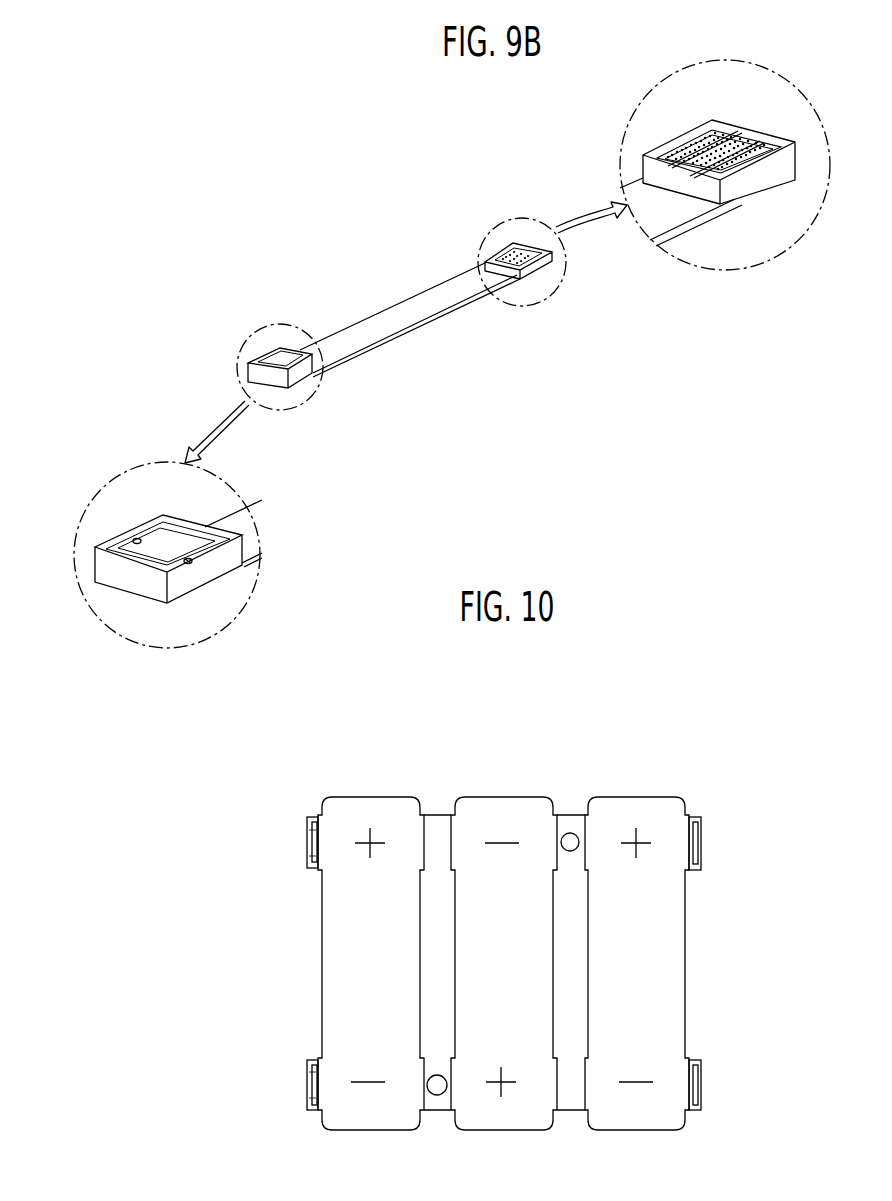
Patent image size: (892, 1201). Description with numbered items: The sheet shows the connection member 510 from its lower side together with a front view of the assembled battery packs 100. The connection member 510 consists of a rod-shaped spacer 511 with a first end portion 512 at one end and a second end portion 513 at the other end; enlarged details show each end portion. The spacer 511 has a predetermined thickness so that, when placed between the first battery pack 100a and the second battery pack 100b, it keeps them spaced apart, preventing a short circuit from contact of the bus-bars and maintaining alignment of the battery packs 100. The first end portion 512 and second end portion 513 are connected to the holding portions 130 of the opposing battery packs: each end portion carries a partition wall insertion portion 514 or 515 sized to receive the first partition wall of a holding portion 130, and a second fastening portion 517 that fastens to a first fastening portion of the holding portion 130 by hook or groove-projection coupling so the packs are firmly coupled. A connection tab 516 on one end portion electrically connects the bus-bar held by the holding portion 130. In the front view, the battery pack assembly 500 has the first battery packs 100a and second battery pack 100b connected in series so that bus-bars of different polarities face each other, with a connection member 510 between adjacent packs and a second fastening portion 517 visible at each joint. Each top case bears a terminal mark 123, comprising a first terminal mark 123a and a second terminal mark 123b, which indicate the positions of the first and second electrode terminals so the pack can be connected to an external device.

In FIG. 9B, the connection member 510 is at (400, 168).
In FIG. 10, the connection member 510 is at (438, 810).
In FIG. 9B, the spacer 511 is at (382, 329).
In FIG. 9B, the first end portion 512 is at (297, 375).
In FIG. 9B, the second end portion 513 is at (535, 268).
In FIG. 9B, the partition wall insertion portion 514 is at (163, 556).
In FIG. 9B, the partition wall insertion portion 515 is at (777, 138).
In FIG. 9B, the connection tab 516 is at (700, 145).
In FIG. 9B, the second fastening portion 517 is at (165, 557).
In FIG. 10, the second fastening portion 517 is at (575, 840).
In FIG. 10, the battery pack 500 is at (247, 763).
In FIG. 10, the battery pack 100 is at (365, 688).
In FIG. 10, the first battery pack 100a is at (362, 792).
In FIG. 10, the second battery pack 100b is at (495, 792).
In FIG. 10, the holding portion 130 is at (713, 843).
In FIG. 10, the terminal mark 123 is at (213, 820).
In FIG. 10, the first terminal mark 123a is at (353, 848).
In FIG. 10, the second terminal mark 123b is at (353, 1090).